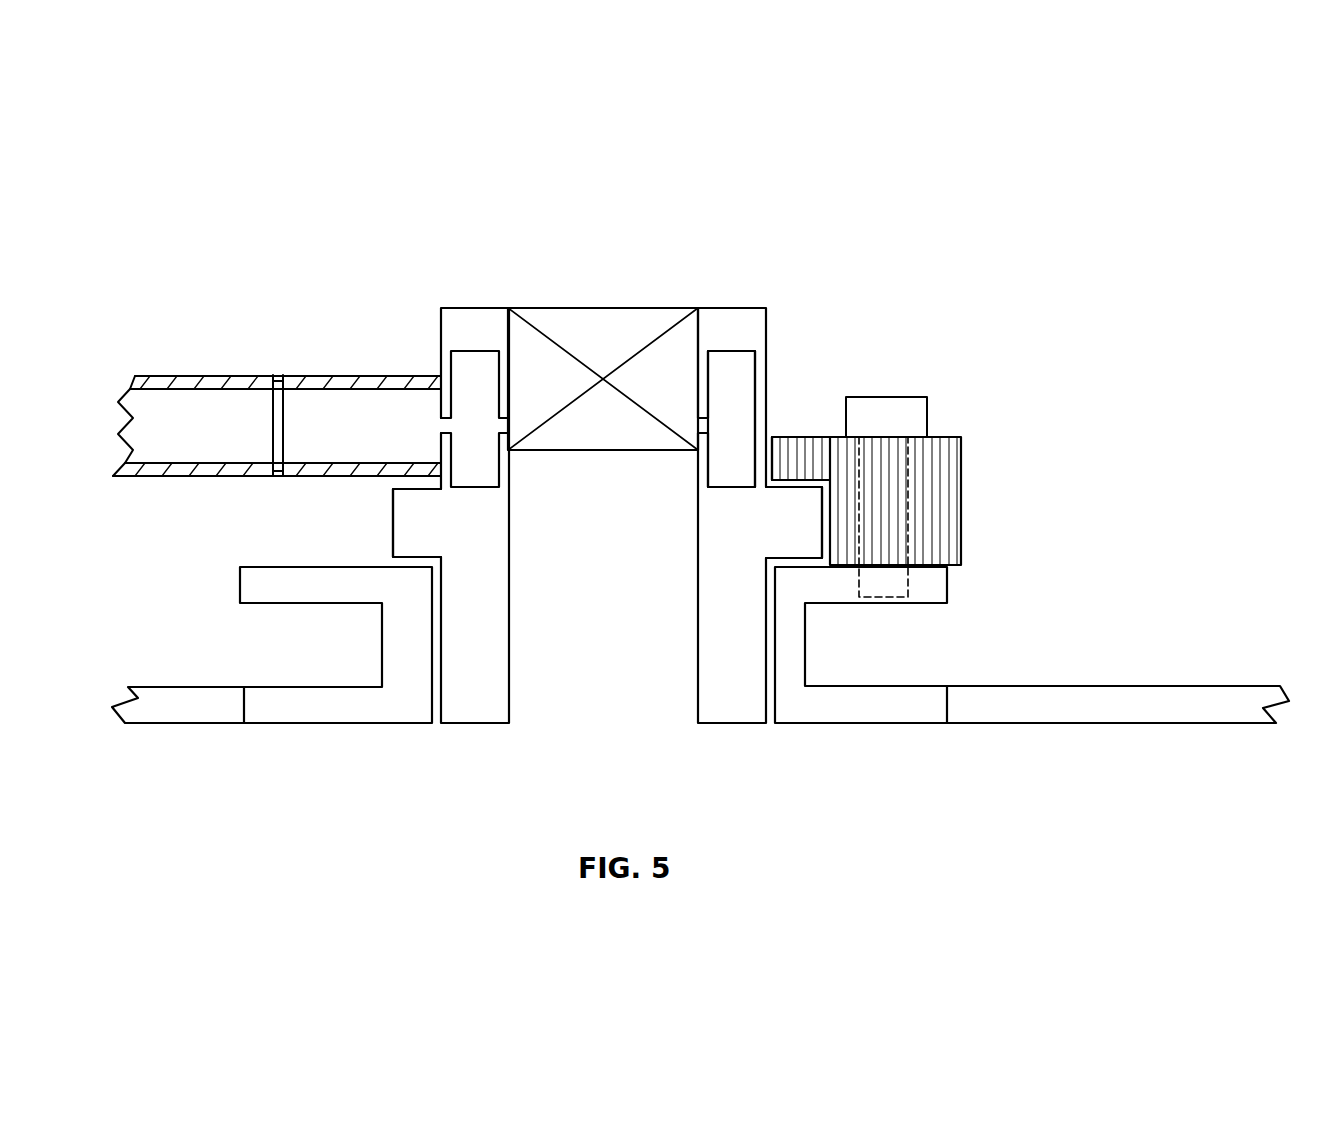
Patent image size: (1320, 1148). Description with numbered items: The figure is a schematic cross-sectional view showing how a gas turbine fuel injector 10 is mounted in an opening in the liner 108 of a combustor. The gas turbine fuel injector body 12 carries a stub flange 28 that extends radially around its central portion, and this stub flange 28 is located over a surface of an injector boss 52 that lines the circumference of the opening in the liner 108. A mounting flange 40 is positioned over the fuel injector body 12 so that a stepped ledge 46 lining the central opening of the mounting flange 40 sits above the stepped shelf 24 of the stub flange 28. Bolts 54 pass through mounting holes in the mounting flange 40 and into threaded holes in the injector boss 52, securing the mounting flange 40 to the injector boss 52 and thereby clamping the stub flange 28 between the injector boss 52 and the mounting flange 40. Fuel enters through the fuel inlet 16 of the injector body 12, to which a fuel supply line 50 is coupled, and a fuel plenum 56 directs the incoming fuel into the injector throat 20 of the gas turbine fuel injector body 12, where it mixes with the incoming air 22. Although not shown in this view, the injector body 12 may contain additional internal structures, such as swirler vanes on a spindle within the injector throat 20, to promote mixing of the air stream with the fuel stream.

The gas turbine fuel injector 10 is at (898, 250).
The gas turbine fuel injector body 12 is at (743, 702).
The fuel inlet 16 is at (276, 374).
The injector throat 20 is at (619, 545).
The air 22 is at (599, 281).
The stepped shelf 24 is at (793, 487).
The stub flange 28 is at (423, 519).
The mounting flange 40 is at (903, 453).
The stepped ledge 46 is at (805, 478).
The fuel supply line 50 is at (212, 405).
The injector boss 52 is at (345, 702).
The bolts 54 is at (898, 415).
The fuel plenum 56 is at (728, 361).
The liner 108 is at (175, 702).